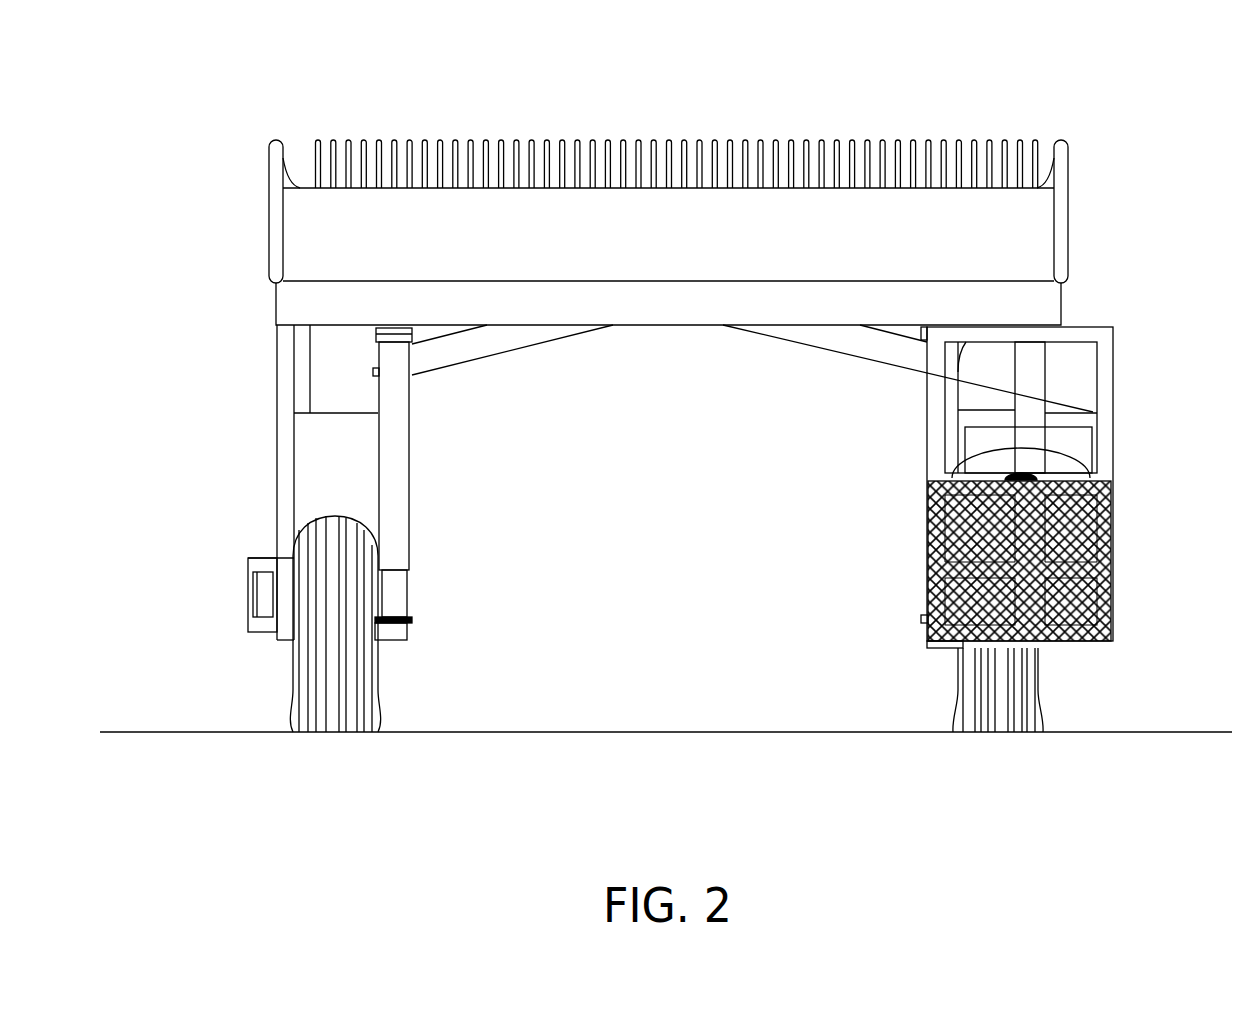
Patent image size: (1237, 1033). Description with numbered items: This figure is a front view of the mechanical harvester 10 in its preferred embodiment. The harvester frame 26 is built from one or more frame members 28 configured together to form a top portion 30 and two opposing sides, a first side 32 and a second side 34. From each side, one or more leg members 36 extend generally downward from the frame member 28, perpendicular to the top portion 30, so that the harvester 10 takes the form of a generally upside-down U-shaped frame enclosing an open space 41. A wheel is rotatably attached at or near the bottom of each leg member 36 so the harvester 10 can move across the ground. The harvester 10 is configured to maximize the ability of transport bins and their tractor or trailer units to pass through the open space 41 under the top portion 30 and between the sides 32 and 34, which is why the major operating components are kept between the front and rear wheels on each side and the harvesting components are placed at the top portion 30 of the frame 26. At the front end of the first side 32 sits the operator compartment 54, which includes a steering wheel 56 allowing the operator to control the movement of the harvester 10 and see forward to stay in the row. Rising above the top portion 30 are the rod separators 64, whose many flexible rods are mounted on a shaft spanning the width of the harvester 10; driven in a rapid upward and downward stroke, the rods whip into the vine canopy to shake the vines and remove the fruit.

The mechanical harvester 10 is at (1126, 100).
The harvester frame 26 is at (292, 305).
The frame member 28 is at (862, 347).
The top portion 30 is at (1100, 266).
The first side 32 is at (1130, 335).
The second side 34 is at (262, 473).
The leg member 36 is at (400, 514).
The open space 41 is at (476, 457).
The operator compartment 54 is at (1127, 528).
The steering wheel 56 is at (1060, 460).
The rod separator 64 is at (702, 150).